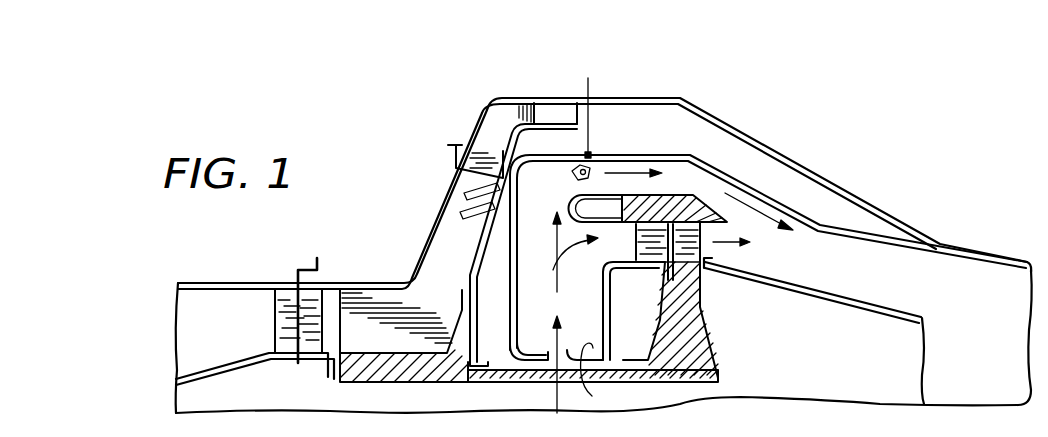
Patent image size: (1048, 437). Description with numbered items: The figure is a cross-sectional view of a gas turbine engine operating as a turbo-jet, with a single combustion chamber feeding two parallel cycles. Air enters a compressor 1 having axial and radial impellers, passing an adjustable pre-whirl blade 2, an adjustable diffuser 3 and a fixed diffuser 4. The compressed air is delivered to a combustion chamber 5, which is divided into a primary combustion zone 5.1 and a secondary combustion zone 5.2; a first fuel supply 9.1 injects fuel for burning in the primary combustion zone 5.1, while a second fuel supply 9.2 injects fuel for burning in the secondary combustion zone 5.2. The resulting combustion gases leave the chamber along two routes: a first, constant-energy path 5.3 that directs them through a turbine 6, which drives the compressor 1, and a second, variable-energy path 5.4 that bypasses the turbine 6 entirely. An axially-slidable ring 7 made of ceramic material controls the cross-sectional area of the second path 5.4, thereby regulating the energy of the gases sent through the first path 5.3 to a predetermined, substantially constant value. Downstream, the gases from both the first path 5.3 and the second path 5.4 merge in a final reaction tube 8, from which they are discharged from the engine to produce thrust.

The compressor 1 is at (372, 345).
The adjustable pre-whirl blade 2 is at (278, 338).
The adjustable diffuser 3 is at (470, 152).
The fixed diffuser 4 is at (546, 112).
The combustion chamber 5 is at (533, 227).
The primary combustion zone 5.1 is at (597, 375).
The secondary combustion zone 5.2 is at (622, 168).
The first, constant-energy path 5.3 is at (617, 245).
The second, variable-energy path 5.4 is at (759, 203).
The turbine 6 is at (703, 327).
The axially-slidable ring 7 is at (668, 200).
The final reaction tube 8 is at (872, 258).
The first fuel supply 9.1 is at (557, 393).
The second fuel supply 9.2 is at (591, 83).